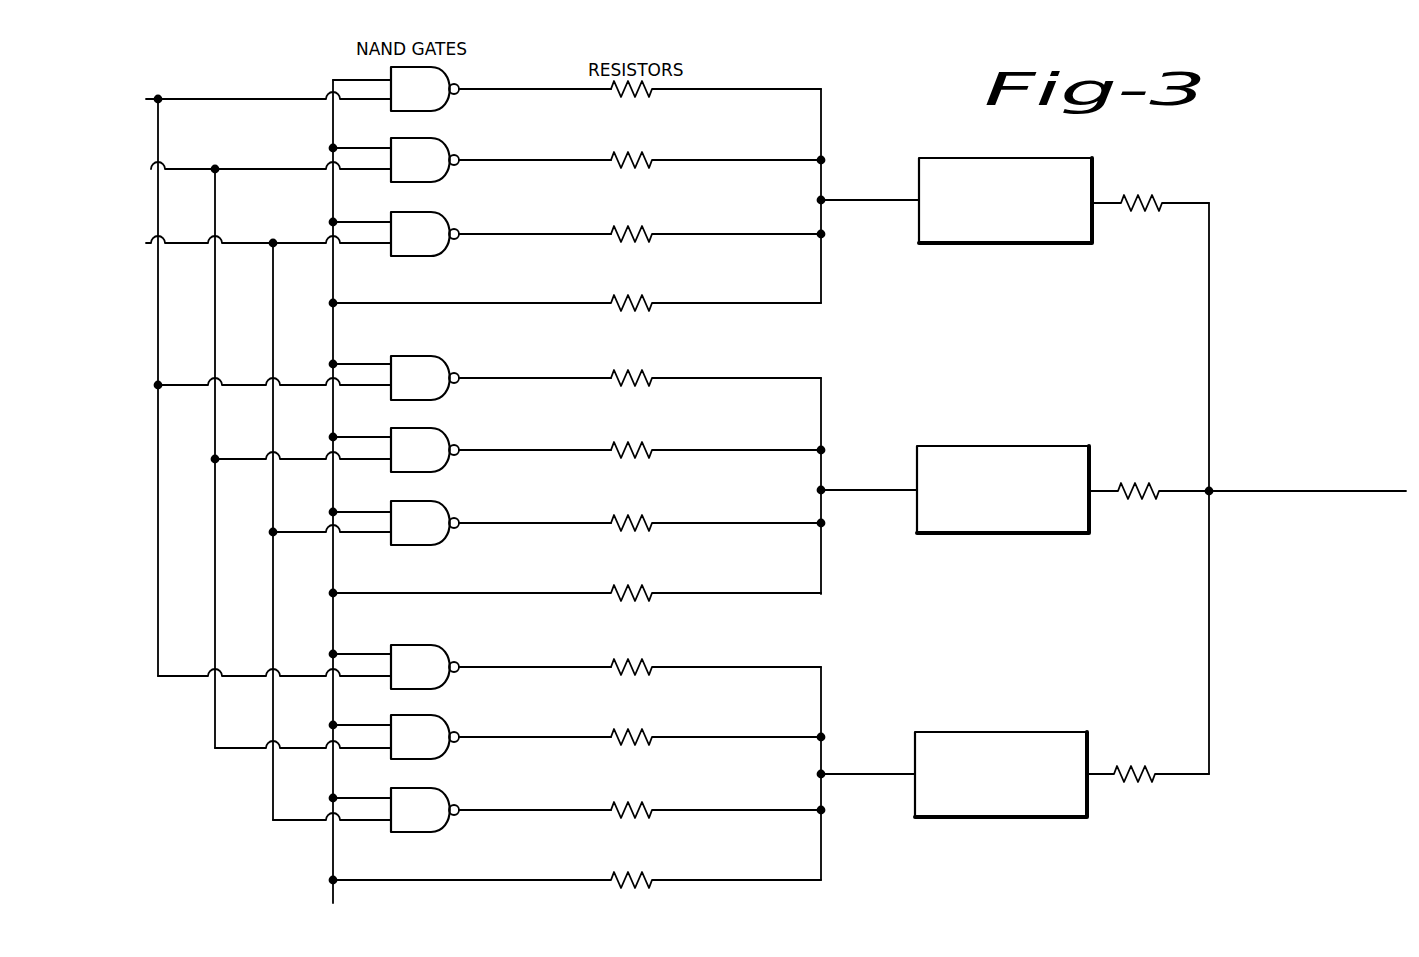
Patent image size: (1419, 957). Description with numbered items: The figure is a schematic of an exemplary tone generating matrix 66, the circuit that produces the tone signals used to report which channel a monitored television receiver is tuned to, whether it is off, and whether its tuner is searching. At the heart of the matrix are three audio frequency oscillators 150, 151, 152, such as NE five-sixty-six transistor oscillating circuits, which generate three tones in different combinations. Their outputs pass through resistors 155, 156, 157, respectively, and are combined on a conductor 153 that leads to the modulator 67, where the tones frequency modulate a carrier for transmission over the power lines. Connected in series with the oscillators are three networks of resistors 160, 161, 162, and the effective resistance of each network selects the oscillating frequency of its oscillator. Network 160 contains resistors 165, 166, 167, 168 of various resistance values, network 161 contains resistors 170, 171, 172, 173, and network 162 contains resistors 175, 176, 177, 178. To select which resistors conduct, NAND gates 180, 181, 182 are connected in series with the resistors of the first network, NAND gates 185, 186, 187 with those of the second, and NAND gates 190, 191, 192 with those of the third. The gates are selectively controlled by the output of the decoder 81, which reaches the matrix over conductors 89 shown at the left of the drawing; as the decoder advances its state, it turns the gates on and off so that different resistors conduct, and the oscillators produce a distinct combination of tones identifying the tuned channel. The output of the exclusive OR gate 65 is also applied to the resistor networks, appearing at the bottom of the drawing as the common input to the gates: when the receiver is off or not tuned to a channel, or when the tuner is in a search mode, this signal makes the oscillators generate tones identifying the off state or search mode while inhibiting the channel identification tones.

The tone generating matrix 66 is at (1186, 182).
The exclusive OR gate 65 is at (383, 916).
The modulator 67 is at (1299, 516).
The decoder 81 is at (131, 240).
The conductors 89 is at (235, 169).
The audio frequency oscillator 150 is at (1010, 242).
The audio frequency oscillator 151 is at (1005, 532).
The audio frequency oscillator 152 is at (1012, 816).
The conductor 153 is at (1279, 488).
The resistor 155 is at (1150, 211).
The resistor 156 is at (1134, 499).
The resistor 157 is at (1154, 783).
The network of resistors 160 is at (706, 85).
The network of resistors 161 is at (745, 366).
The network of resistors 162 is at (731, 659).
The resistor 165 is at (658, 89).
The resistor 166 is at (658, 160).
The resistor 167 is at (658, 234).
The resistor 168 is at (658, 303).
The resistor 170 is at (658, 378).
The resistor 171 is at (658, 450).
The resistor 172 is at (658, 523).
The resistor 173 is at (658, 593).
The resistor 175 is at (658, 667).
The resistor 176 is at (658, 737).
The resistor 177 is at (658, 810).
The resistor 178 is at (658, 880).
The NAND gate 180 is at (440, 106).
The NAND gate 181 is at (440, 177).
The NAND gate 182 is at (440, 251).
The NAND gate 185 is at (440, 395).
The NAND gate 186 is at (440, 467).
The NAND gate 187 is at (440, 540).
The NAND gate 190 is at (440, 684).
The NAND gate 191 is at (440, 754).
The NAND gate 192 is at (440, 827).